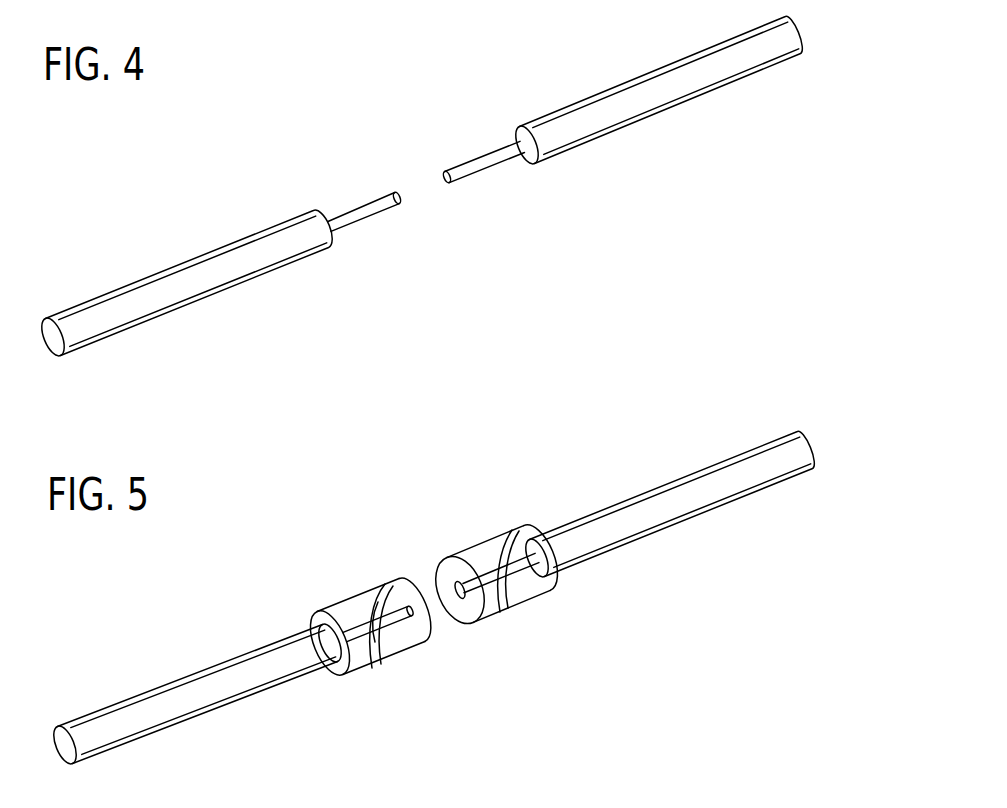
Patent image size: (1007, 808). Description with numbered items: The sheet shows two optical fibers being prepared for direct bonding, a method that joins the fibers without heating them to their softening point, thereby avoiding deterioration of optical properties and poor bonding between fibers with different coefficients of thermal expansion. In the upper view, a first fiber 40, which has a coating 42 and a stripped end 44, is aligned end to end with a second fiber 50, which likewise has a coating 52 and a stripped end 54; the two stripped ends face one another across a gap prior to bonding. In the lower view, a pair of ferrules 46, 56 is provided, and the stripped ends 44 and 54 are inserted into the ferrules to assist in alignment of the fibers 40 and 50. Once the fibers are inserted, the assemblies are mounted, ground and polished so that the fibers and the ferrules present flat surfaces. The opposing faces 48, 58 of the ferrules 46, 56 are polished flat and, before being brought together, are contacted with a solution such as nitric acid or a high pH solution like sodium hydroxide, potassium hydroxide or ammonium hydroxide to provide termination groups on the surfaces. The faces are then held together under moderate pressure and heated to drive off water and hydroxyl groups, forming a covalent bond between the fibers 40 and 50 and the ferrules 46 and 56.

In FIG. 4, the first fiber 40 is at (219, 245).
In FIG. 5, the first fiber 40 is at (184, 677).
In FIG. 4, the coating 42 is at (218, 265).
In FIG. 4, the stripped end 44 is at (363, 207).
In FIG. 5, the stripped end 44 is at (352, 605).
In FIG. 5, the ferrule 46 is at (379, 620).
In FIG. 5, the opposing face 48 is at (432, 628).
In FIG. 4, the second fiber 50 is at (611, 99).
In FIG. 5, the second fiber 50 is at (712, 510).
In FIG. 4, the coating 52 is at (600, 115).
In FIG. 4, the stripped end 54 is at (470, 163).
In FIG. 5, the ferrule 56 is at (505, 572).
In FIG. 5, the opposing face 58 is at (453, 577).